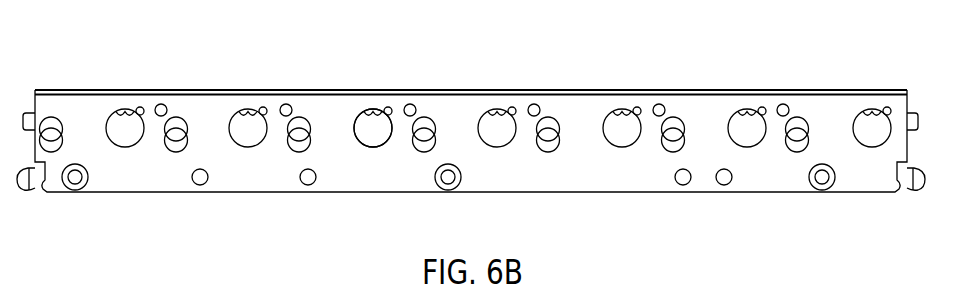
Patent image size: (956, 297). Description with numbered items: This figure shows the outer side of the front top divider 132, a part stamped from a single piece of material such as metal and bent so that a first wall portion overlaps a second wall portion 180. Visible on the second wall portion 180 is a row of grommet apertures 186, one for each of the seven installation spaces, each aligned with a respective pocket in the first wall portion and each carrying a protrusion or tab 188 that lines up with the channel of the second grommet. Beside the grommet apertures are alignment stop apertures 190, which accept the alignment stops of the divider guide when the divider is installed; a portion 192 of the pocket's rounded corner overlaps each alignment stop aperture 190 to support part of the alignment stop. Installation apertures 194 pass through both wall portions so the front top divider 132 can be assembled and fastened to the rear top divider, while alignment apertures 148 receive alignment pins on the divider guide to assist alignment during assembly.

The front top divider 132 is at (302, 90).
The alignment aperture 148 is at (209, 186).
The second wall portion 180 is at (328, 190).
The grommet aperture 186 is at (390, 149).
The protrusion or tab 188 is at (374, 107).
The alignment stop aperture 190 is at (553, 157).
The portion of rounded corner 192 is at (550, 115).
The installation aperture 194 is at (171, 102).